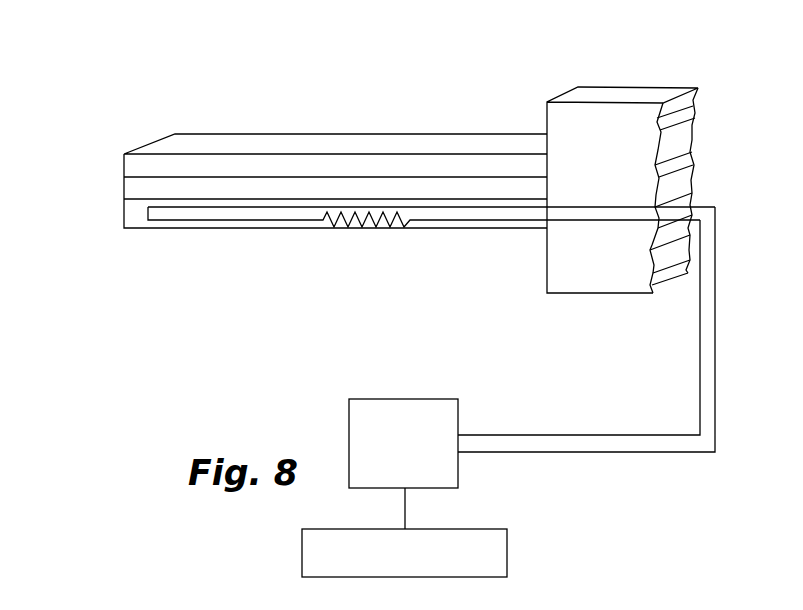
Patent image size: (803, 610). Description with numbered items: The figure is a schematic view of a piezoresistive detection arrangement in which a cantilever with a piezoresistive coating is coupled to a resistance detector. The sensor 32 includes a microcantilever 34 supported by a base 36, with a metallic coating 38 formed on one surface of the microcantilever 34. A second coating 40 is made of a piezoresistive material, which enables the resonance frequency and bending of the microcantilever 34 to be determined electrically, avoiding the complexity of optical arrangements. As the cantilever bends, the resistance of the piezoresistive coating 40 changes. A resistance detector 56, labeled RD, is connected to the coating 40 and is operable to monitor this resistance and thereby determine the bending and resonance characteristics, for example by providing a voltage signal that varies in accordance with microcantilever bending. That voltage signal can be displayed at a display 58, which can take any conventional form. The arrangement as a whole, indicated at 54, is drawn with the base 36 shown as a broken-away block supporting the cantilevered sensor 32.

The sensor 32 is at (105, 227).
The microcantilever 34 is at (113, 180).
The base 36 is at (637, 95).
The metallic coating 38 is at (320, 147).
The piezoresistive coating 40 is at (295, 232).
The sensor assembly 54 is at (532, 68).
The resistance detector 56 is at (377, 398).
The display 58 is at (507, 560).